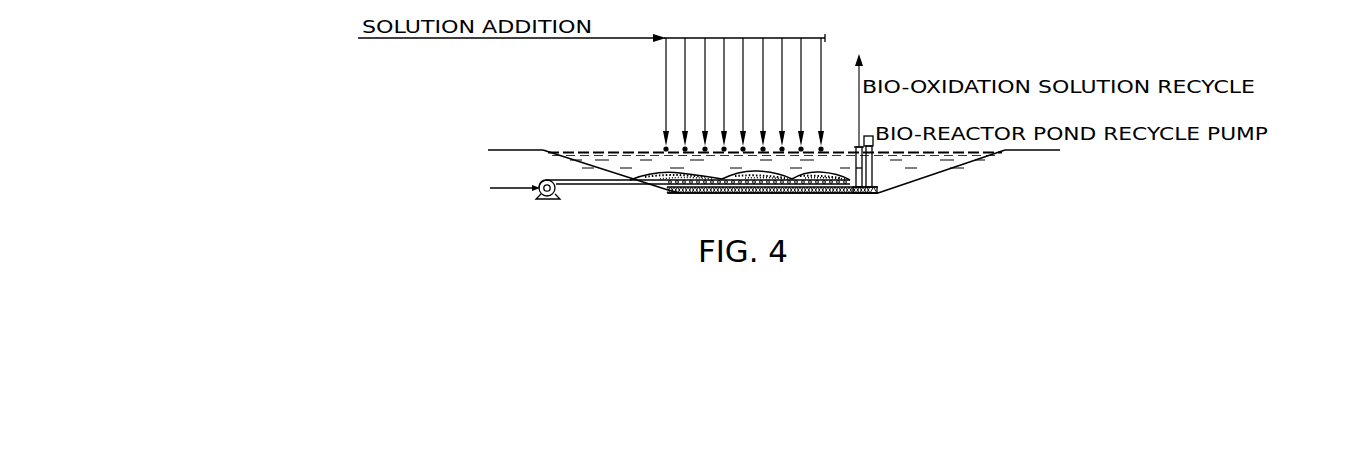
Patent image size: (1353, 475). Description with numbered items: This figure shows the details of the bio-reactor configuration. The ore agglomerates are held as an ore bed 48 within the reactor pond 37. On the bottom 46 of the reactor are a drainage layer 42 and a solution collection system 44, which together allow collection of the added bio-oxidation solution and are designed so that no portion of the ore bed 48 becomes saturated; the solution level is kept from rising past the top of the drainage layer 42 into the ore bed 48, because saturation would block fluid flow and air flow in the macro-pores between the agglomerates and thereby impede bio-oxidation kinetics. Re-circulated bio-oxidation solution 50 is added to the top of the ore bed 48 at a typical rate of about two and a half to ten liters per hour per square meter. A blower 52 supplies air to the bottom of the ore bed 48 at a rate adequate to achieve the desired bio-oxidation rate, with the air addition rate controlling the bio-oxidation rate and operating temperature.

The reactor pond 37 is at (890, 165).
The drainage layer 42 is at (821, 194).
The solution collection system 44 is at (763, 194).
The bottom 46 is at (692, 191).
The ore bed 48 is at (652, 175).
The re-circulated bio-oxidation solution 50 is at (664, 82).
The blower 52 is at (538, 197).